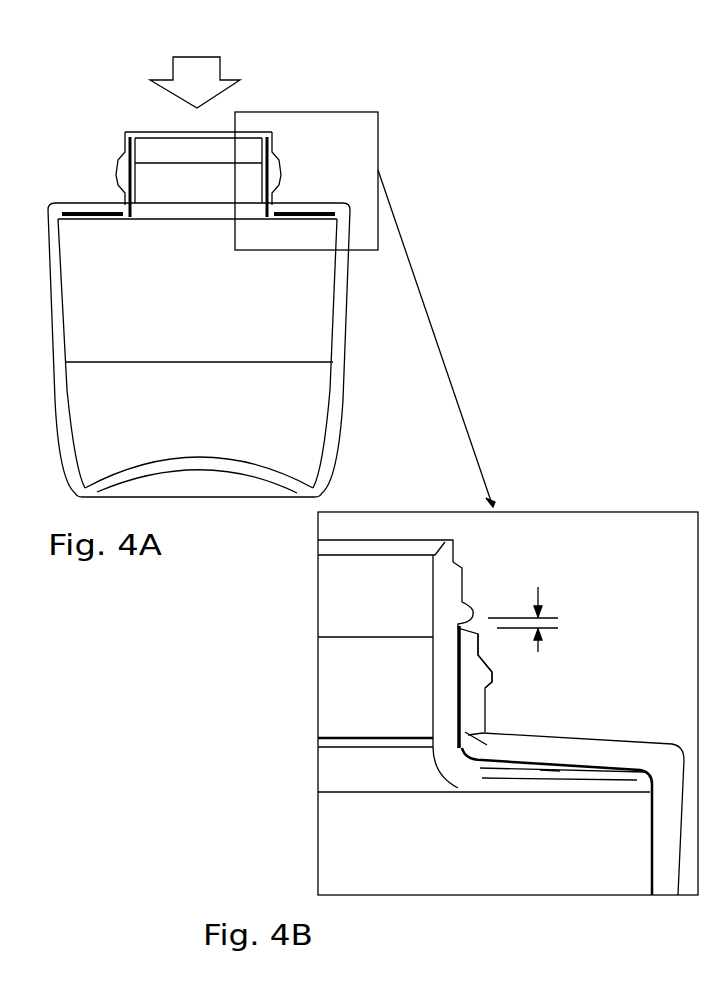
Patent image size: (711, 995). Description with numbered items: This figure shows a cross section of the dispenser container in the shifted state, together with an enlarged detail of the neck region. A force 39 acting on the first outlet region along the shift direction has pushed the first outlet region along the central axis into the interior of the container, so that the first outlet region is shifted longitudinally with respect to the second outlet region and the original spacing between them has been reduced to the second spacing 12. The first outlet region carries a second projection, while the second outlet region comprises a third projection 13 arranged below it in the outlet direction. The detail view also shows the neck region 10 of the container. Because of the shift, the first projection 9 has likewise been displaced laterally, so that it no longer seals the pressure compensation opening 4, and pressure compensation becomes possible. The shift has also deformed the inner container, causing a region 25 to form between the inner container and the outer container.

In FIG. 4A, the force 39 is at (174, 68).
In FIG. 4B, the container neck 10 is at (468, 605).
In FIG. 4B, the second spacing 12 is at (543, 600).
In FIG. 4B, the third projection 13 is at (493, 678).
In FIG. 4B, the pressure compensation opening 4 is at (468, 735).
In FIG. 4B, the region 25 is at (538, 770).
In FIG. 4B, the first projection 9 is at (472, 767).